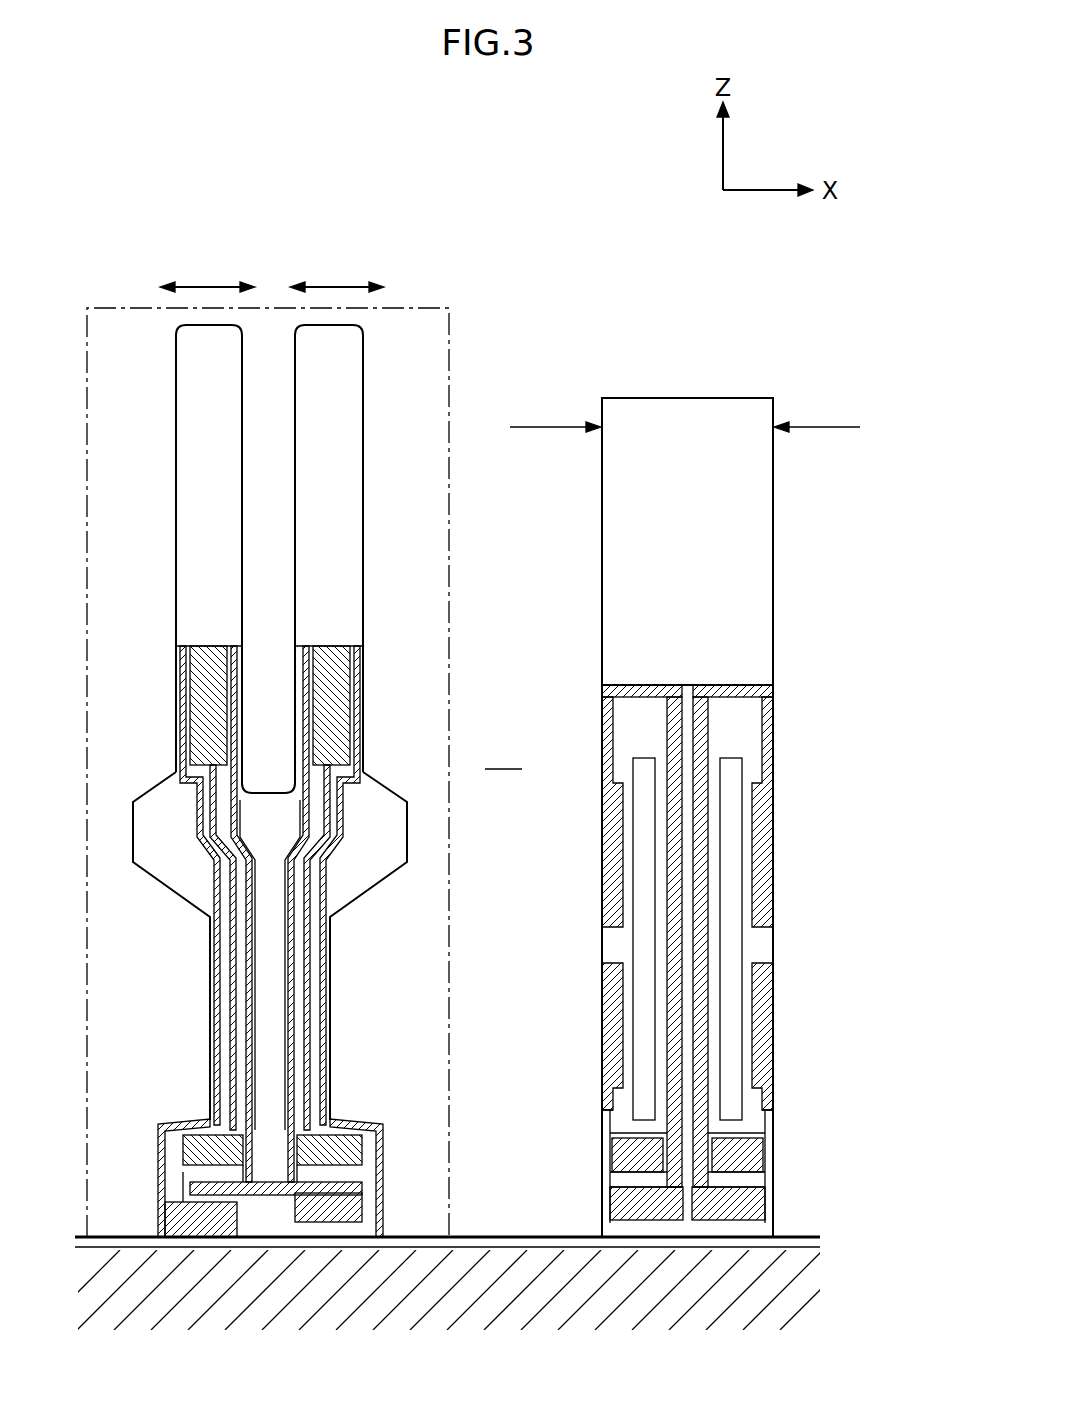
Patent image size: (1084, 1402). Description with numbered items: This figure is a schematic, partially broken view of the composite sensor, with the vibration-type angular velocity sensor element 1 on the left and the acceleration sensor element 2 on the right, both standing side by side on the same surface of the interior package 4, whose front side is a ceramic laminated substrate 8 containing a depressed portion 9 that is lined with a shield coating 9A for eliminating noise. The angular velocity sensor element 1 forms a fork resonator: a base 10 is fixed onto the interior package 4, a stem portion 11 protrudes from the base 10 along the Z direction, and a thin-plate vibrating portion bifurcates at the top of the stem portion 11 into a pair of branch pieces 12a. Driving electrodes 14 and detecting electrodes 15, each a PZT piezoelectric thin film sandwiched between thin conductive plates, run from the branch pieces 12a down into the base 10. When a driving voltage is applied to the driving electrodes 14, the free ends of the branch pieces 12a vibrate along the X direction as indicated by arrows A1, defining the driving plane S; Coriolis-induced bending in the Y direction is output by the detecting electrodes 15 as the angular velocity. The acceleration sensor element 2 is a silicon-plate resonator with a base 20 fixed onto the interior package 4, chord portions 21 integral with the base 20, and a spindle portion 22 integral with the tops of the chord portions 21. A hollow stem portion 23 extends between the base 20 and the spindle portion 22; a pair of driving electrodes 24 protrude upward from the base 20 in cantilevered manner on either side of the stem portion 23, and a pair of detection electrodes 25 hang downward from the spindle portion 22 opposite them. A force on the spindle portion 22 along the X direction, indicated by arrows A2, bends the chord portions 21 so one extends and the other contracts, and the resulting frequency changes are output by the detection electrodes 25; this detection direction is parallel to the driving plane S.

The vibration-type angular velocity sensor element 1 is at (463, 259).
The acceleration sensor element 2 is at (775, 326).
The interior package 4 is at (450, 1236).
The ceramic laminated substrate 8 is at (588, 1277).
The depressed portion 9 is at (503, 754).
The shield coating 9A is at (514, 1240).
The base 10 is at (157, 1145).
The stem portion 11 is at (207, 1012).
The branch pieces 12a is at (345, 517).
The driving electrodes 14 is at (232, 687).
The detecting electrodes 15 is at (207, 735).
The base 20 is at (770, 1200).
The chord portions 21 is at (613, 940).
The spindle portion 22 is at (648, 557).
The stem portion 23 is at (665, 720).
The driving electrodes 24 is at (612, 1058).
The detection electrodes 25 is at (612, 876).
The driving plane S is at (449, 360).
The arrows A1 is at (210, 287).
The arrows A2 is at (685, 409).